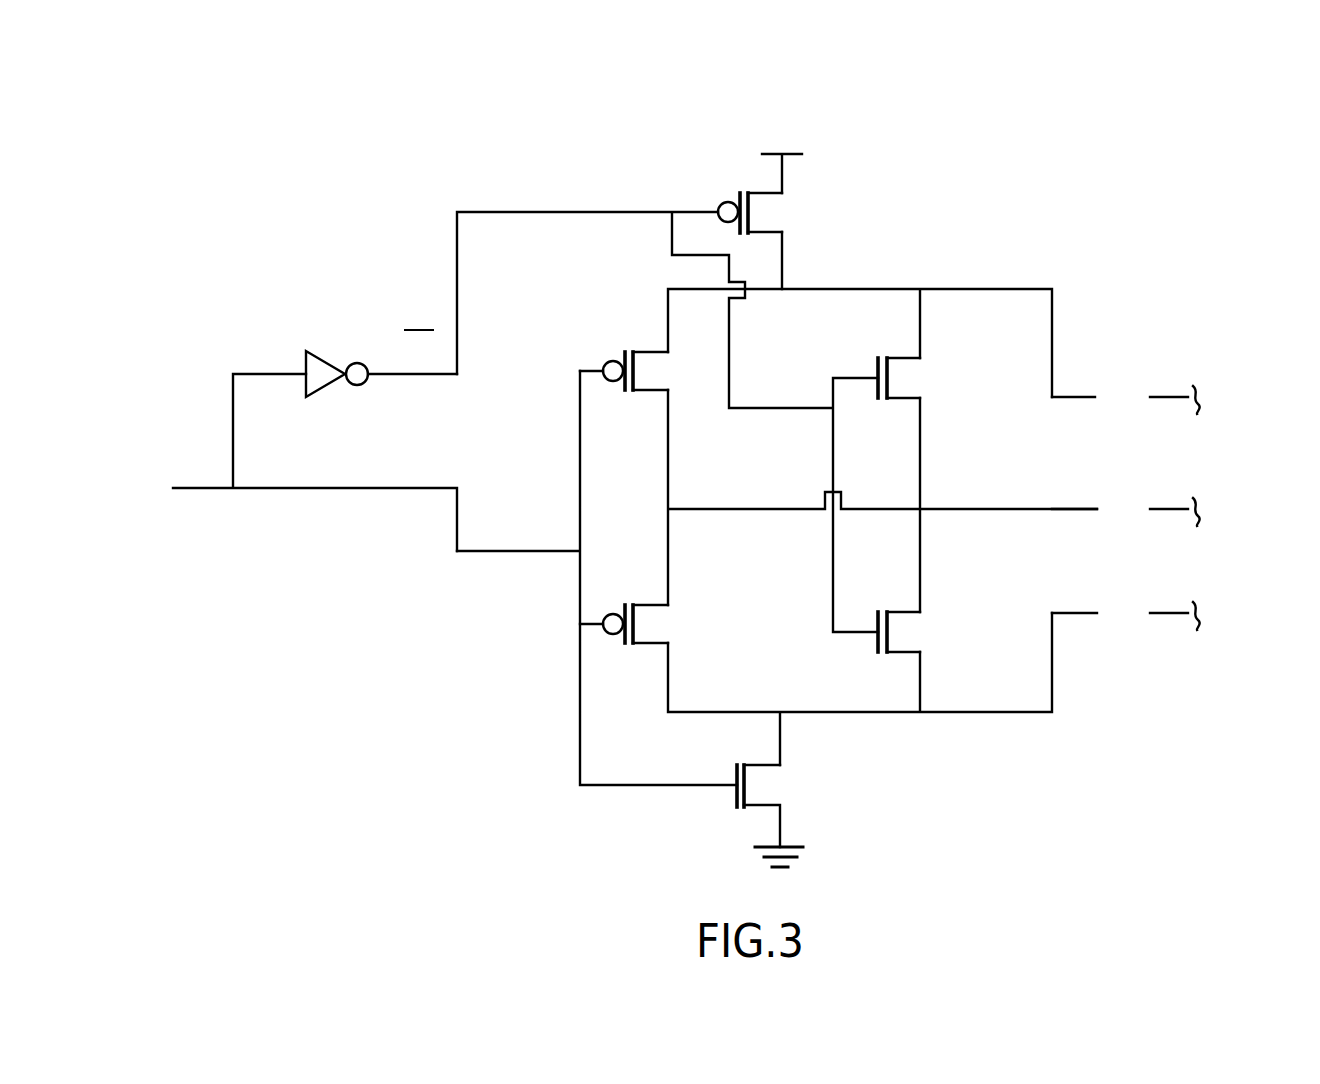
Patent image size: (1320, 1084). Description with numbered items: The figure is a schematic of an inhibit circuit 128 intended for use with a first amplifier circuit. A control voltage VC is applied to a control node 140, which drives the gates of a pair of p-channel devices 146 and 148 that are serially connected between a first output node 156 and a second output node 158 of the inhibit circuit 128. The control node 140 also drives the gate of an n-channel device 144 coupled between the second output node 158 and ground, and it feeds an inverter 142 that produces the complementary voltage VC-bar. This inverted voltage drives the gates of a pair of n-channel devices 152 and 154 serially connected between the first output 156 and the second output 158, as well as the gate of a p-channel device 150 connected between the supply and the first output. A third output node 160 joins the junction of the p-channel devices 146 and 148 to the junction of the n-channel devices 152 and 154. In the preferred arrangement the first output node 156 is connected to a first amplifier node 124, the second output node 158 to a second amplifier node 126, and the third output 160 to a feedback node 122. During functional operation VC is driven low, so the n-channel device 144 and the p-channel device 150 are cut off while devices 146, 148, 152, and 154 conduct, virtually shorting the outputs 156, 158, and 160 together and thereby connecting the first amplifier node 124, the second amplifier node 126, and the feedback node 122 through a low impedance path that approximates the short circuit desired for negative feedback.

The inhibit circuit 128 is at (1202, 202).
The control node 140 is at (193, 489).
The inverter 142 is at (322, 360).
The n-channel device 144 is at (765, 783).
The p-channel device 146 is at (651, 375).
The p-channel device 148 is at (675, 627).
The p-channel device 150 is at (795, 210).
The n-channel device 152 is at (912, 380).
The n-channel device 154 is at (912, 630).
The first output node 156 is at (1073, 397).
The second output node 158 is at (1073, 613).
The third output node 160 is at (1073, 509).
The feedback node 122 is at (1170, 509).
The first amplifier node 124 is at (1170, 397).
The second amplifier node 126 is at (1170, 613).